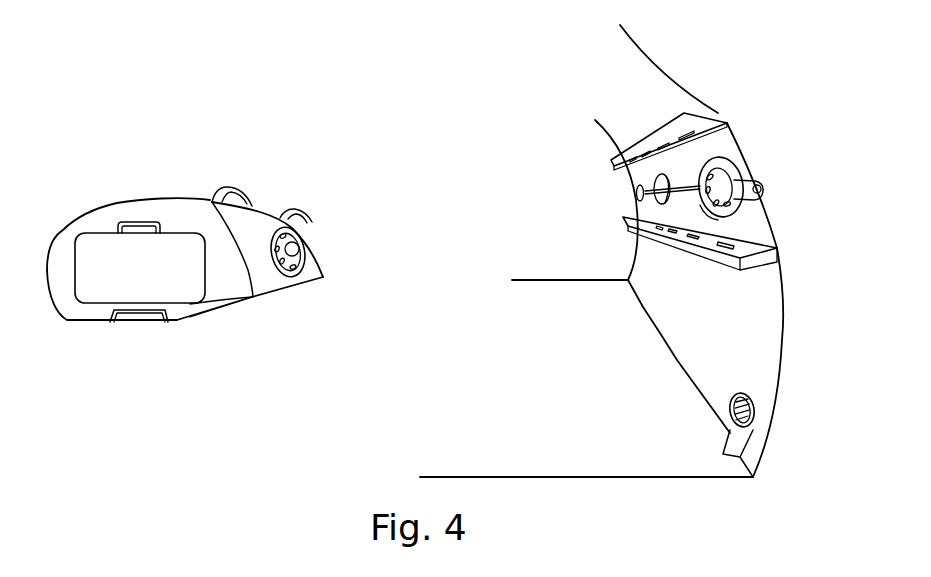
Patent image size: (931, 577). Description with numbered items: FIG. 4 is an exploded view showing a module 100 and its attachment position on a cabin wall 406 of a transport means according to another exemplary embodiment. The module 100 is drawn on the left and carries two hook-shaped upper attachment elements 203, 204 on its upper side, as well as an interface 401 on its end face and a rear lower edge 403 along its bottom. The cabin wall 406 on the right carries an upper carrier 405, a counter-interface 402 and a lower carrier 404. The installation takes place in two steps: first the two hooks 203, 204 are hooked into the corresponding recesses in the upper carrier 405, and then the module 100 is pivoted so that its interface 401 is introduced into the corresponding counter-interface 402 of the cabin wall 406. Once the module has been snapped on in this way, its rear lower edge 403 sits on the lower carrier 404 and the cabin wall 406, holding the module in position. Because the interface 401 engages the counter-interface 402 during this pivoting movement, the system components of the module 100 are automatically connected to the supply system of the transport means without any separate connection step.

The module 100 is at (73, 303).
The hook-shaped upper attachment element 203 is at (305, 213).
The hook-shaped upper attachment element 204 is at (242, 192).
The interface 401 is at (301, 263).
The counter-interface 402 is at (722, 168).
The rear lower edge 403 is at (253, 298).
The lower carrier 404 is at (716, 253).
The upper carrier 405 is at (653, 130).
The cabin wall 406 is at (772, 217).